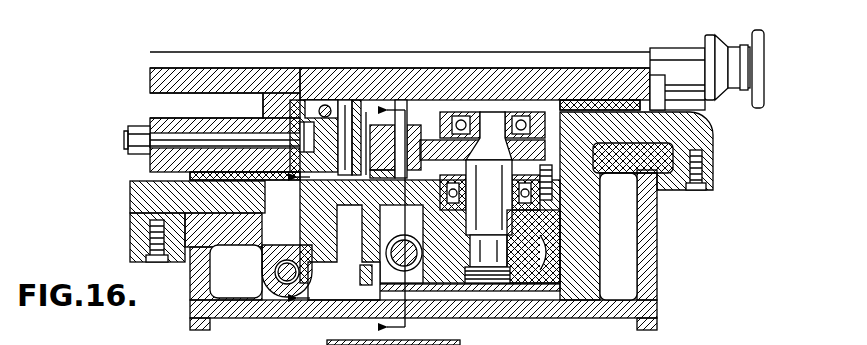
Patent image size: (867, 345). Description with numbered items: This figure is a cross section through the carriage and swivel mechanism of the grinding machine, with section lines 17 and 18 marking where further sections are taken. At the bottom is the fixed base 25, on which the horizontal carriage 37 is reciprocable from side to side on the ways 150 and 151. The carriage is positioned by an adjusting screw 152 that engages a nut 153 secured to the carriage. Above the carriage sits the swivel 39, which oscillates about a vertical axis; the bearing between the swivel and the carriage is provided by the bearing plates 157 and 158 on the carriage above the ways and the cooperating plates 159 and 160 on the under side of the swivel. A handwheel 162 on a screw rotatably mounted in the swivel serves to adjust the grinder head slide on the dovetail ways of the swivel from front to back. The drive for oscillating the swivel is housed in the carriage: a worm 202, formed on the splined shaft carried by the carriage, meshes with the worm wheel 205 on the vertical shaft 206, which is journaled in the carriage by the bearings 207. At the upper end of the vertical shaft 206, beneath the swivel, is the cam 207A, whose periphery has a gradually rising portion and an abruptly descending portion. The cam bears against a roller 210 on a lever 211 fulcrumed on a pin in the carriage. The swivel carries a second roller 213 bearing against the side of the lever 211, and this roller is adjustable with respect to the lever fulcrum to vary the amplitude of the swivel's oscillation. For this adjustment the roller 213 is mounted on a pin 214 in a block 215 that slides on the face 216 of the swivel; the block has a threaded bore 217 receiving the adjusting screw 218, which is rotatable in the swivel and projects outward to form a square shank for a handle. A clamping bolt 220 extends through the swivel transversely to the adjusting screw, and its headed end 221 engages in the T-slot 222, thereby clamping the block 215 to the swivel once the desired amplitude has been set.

The section line 17- 17 is at (314, 235).
The section line 18- 18 is at (380, 219).
The base 25 is at (193, 317).
The horizontal carriage 37 is at (693, 145).
The swivel 39 is at (545, 80).
The way 150 is at (660, 190).
The way 151 is at (197, 225).
The adjusting screw 152 is at (280, 302).
The nut 153 is at (275, 273).
The bearing plate 157 is at (710, 113).
The bearing plate 158 is at (195, 174).
The cooperating plate 159 is at (617, 100).
The cooperating plate 160 is at (203, 173).
The handwheel 162 is at (758, 34).
The worm 202 is at (390, 238).
The worm wheel 205 is at (462, 253).
The vertical shaft 206 is at (498, 250).
The bearings 207 is at (550, 220).
The cam 207A is at (560, 100).
The roller 210 is at (418, 137).
The lever 211 is at (418, 112).
The roller 213 is at (346, 115).
The pin 214 is at (358, 122).
The block 215 is at (263, 115).
The face 216 is at (288, 117).
The threaded bore 217 is at (327, 110).
The adjusting screw 218 is at (325, 102).
The clamping bolt 220 is at (175, 138).
The headed end 221 is at (292, 110).
The T-slot 222 is at (305, 108).